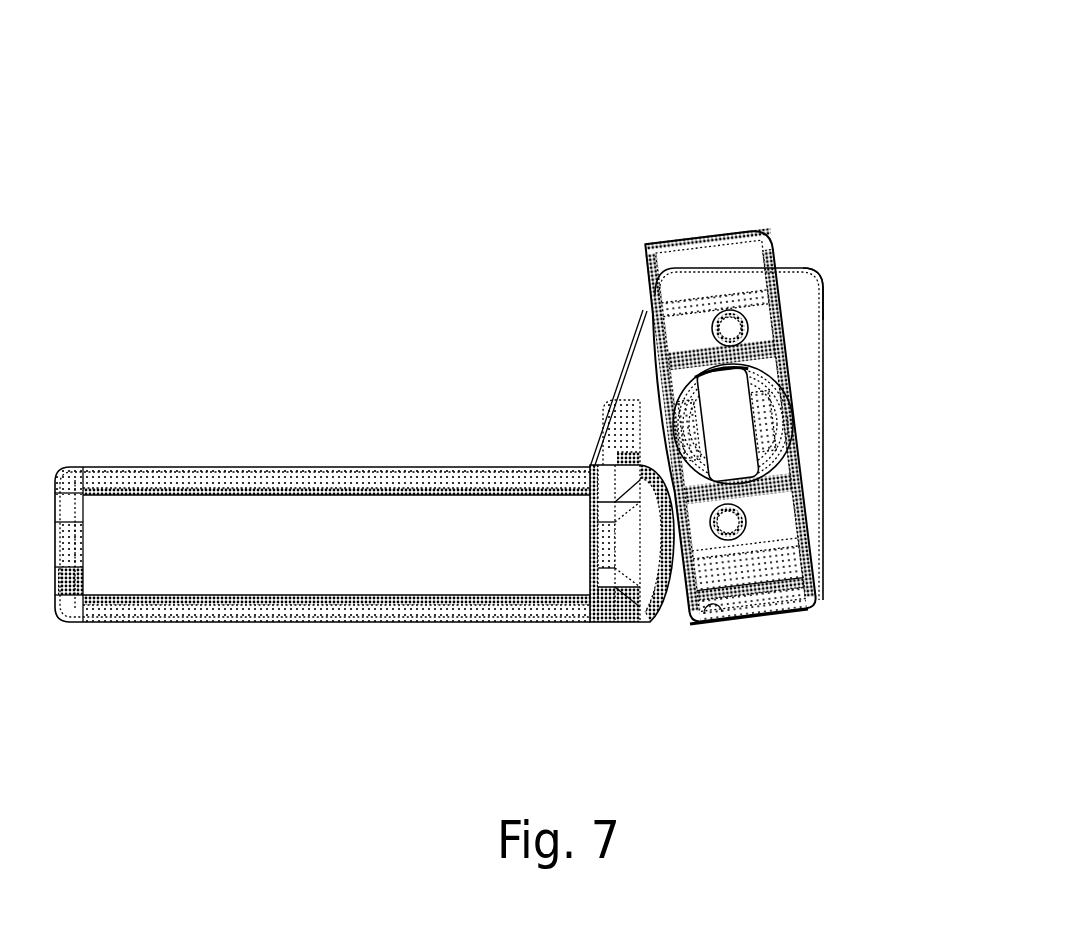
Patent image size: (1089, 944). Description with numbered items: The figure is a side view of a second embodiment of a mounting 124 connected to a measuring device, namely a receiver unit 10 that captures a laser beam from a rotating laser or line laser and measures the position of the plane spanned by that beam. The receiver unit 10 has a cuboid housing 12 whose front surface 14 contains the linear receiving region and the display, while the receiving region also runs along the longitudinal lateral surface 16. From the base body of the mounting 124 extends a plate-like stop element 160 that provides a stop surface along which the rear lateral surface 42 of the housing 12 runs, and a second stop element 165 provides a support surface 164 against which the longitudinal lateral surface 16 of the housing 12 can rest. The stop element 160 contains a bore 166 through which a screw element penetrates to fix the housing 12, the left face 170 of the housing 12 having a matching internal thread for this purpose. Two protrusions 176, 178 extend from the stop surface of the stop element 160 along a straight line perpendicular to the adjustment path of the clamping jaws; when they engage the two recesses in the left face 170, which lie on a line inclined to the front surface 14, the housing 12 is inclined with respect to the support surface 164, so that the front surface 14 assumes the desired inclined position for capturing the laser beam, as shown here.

The receiver unit 10 is at (647, 148).
The housing 12 is at (772, 240).
The front surface 14 is at (815, 264).
The longitudinal lateral surface 16 is at (812, 612).
The rear lateral surface 42 is at (643, 330).
The mounting 124 is at (282, 358).
The stop element 160 is at (812, 387).
The support surface 164 is at (640, 405).
The second stop element 165 is at (617, 447).
The bore 166 is at (758, 418).
The left face 170 is at (724, 612).
The protrusion 176 is at (748, 316).
The protrusion 178 is at (745, 514).